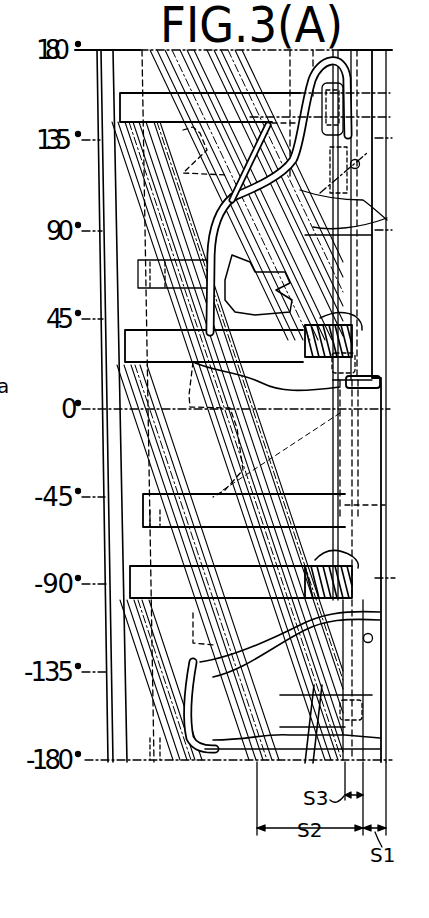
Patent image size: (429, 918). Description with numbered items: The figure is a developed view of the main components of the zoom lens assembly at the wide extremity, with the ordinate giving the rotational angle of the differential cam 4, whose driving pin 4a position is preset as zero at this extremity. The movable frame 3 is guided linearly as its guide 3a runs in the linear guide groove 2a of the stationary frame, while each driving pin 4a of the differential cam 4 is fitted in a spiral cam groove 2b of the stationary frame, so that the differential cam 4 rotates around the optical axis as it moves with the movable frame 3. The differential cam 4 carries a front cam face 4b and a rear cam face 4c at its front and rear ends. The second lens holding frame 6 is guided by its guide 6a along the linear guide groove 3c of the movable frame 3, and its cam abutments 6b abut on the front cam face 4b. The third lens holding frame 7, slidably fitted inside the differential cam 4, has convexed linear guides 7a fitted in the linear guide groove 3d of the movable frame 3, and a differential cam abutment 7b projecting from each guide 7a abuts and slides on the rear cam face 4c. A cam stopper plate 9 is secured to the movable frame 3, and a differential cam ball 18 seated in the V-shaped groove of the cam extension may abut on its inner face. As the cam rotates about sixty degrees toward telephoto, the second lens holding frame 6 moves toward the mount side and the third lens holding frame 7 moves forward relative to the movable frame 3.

The linear guide groove 2a is at (117, 117).
The spiral cam groove 2b is at (200, 297).
The movable frame 3 is at (295, 288).
The guide 3a is at (348, 322).
The linear guide groove 3c is at (145, 273).
The linear guide groove 3d is at (297, 107).
The differential cam 4 is at (372, 205).
The driving pin 4a is at (361, 167).
The front cam face 4b is at (213, 215).
The rear cam face 4c is at (365, 221).
The second lens holding frame 6 is at (185, 705).
The guide 6a is at (138, 263).
The cam abutment 6b is at (292, 289).
The third lens holding frame 7 is at (325, 248).
The linear guide 7a is at (363, 100).
The differential cam abutment 7b is at (353, 115).
The cam stopper plate 9 is at (362, 352).
The differential cam ball 18 is at (334, 170).